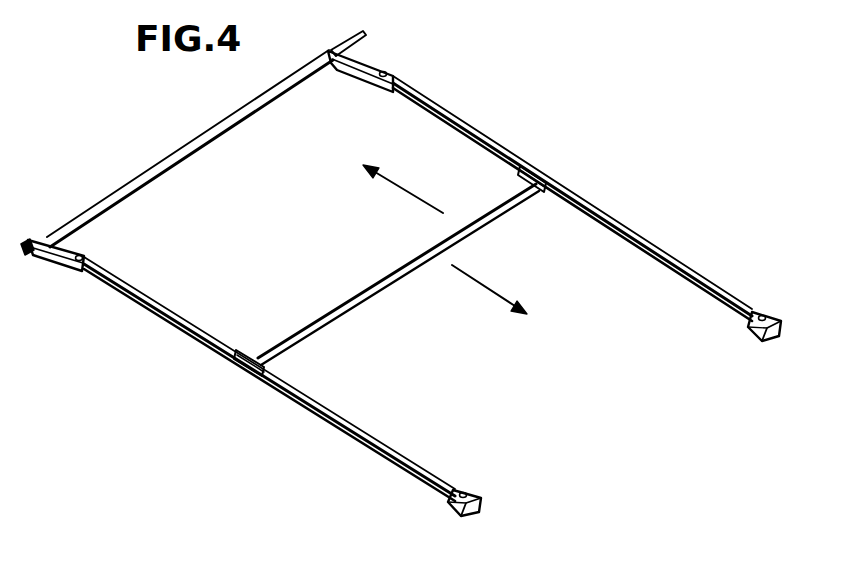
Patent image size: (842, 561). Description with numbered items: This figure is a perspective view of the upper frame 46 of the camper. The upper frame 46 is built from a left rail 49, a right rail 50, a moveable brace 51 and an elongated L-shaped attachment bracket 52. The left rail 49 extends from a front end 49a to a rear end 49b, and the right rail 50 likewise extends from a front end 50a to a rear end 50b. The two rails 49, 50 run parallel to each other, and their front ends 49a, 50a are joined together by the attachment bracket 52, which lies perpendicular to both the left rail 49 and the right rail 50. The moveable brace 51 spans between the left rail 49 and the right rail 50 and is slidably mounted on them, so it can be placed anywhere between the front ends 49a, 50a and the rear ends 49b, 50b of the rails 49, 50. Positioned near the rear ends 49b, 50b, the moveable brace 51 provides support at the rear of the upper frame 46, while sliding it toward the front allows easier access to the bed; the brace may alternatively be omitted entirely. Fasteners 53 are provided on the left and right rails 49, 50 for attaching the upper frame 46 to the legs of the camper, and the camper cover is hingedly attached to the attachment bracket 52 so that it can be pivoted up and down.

The upper frame 46 is at (196, 378).
The left rail 49 is at (285, 398).
The front end 49a is at (40, 260).
The rear end 49b is at (449, 509).
The right rail 50 is at (487, 137).
The front end 50a is at (358, 48).
The rear end 50b is at (757, 335).
The moveable brace 51 is at (390, 268).
The attachment bracket 52 is at (186, 140).
The fasteners 53 is at (386, 73).